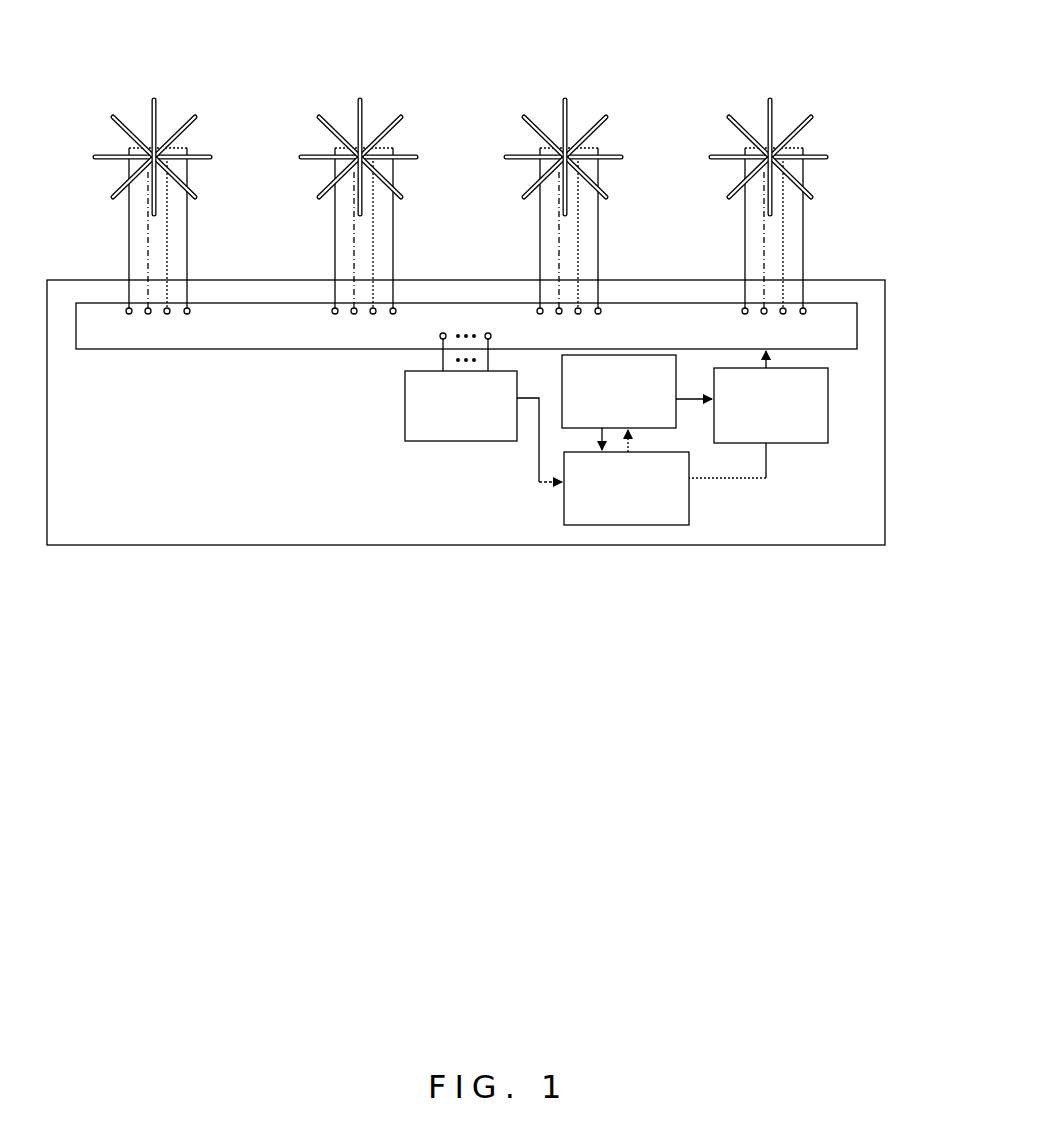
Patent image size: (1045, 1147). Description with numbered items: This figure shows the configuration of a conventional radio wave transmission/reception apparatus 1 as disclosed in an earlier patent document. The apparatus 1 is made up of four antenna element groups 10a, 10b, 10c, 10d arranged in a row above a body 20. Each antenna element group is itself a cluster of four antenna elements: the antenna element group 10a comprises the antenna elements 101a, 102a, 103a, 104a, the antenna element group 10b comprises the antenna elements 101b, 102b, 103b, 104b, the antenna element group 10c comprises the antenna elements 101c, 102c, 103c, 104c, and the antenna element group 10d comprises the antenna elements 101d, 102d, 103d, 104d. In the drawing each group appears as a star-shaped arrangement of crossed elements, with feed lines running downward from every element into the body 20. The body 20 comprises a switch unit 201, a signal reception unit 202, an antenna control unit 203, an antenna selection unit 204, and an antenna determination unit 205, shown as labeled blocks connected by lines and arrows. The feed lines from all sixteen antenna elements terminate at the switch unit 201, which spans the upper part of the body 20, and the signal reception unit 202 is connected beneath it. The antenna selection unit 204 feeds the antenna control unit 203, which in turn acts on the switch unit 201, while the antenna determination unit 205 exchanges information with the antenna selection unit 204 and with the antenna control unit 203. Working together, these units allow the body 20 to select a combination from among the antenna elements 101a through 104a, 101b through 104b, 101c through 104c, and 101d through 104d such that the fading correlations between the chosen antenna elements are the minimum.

The radio wave transmission/reception apparatus 1 is at (702, 46).
The antenna element group 10a is at (791, 184).
The antenna element group 10b is at (586, 184).
The antenna element group 10c is at (381, 185).
The antenna element group 10d is at (157, 90).
The antenna element 101a is at (800, 152).
The antenna element 101b is at (595, 152).
The antenna element 101c is at (390, 152).
The antenna element 101d is at (158, 111).
The antenna element 102a is at (800, 157).
The antenna element 102b is at (595, 157).
The antenna element 102c is at (390, 157).
The antenna element 102d is at (196, 121).
The antenna element 103a is at (791, 174).
The antenna element 103b is at (586, 174).
The antenna element 103c is at (381, 174).
The antenna element 103d is at (201, 162).
The antenna element 104a is at (800, 163).
The antenna element 104b is at (595, 163).
The antenna element 104c is at (390, 163).
The antenna element 104d is at (196, 194).
The body 20 is at (887, 288).
The switch unit 201 is at (859, 322).
The signal reception unit 202 is at (505, 373).
The antenna control unit 203 is at (796, 373).
The antenna selection unit 204 is at (677, 386).
The antenna determination unit 205 is at (650, 452).